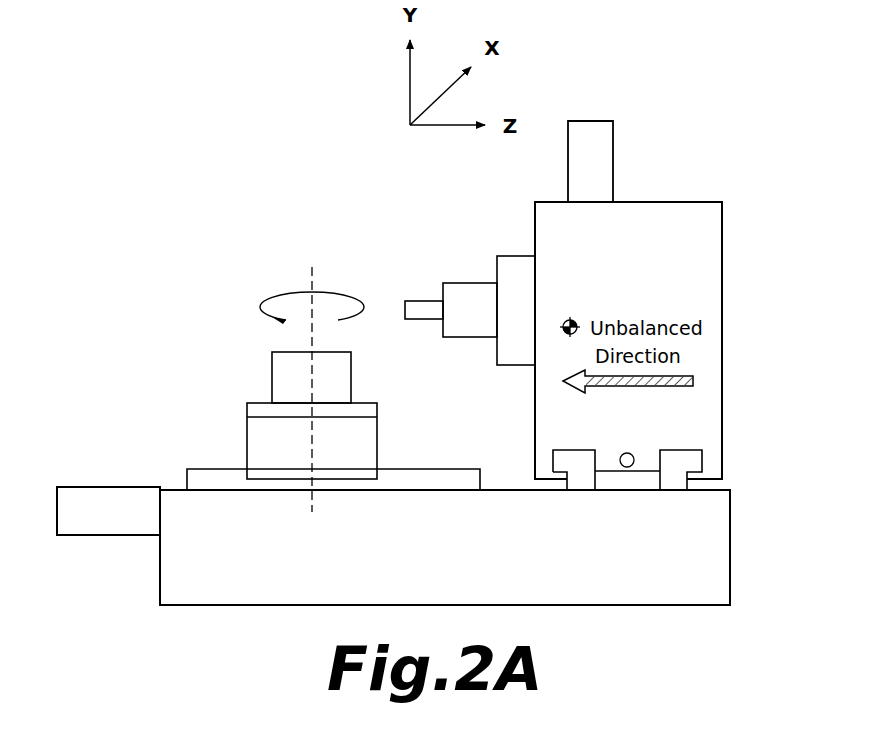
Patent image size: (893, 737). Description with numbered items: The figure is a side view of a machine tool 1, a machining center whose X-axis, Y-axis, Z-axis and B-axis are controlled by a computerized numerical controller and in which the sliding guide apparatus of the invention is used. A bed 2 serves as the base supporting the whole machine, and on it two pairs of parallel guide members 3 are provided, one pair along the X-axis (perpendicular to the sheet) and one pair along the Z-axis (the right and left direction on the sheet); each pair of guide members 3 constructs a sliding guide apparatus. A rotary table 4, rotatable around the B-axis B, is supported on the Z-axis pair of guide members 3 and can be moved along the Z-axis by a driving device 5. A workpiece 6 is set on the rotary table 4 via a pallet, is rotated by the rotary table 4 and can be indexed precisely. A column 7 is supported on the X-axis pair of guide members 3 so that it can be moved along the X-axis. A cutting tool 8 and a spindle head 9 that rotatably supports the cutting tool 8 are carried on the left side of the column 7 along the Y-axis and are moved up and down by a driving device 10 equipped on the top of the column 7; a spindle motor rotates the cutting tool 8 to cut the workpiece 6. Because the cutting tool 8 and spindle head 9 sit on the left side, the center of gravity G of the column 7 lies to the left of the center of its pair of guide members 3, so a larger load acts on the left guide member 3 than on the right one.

The machine tool 1 is at (266, 181).
The bed 2 is at (641, 606).
The guide members 3 is at (417, 481).
The rotary table 4 is at (247, 431).
The driving device 5 is at (90, 486).
The workpiece 6 is at (353, 376).
The column 7 is at (690, 201).
The cutting tool 8 is at (423, 300).
The spindle head 9 is at (511, 255).
The driving device 10 is at (600, 120).
The B-axis B is at (312, 377).
The center of gravity G is at (573, 320).